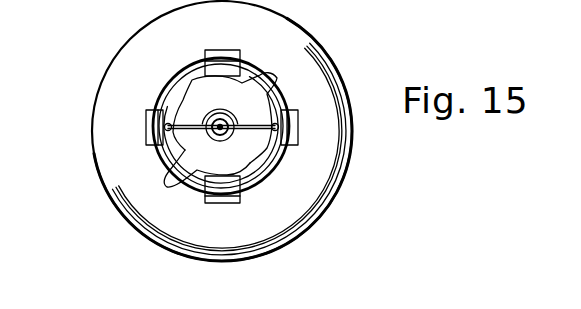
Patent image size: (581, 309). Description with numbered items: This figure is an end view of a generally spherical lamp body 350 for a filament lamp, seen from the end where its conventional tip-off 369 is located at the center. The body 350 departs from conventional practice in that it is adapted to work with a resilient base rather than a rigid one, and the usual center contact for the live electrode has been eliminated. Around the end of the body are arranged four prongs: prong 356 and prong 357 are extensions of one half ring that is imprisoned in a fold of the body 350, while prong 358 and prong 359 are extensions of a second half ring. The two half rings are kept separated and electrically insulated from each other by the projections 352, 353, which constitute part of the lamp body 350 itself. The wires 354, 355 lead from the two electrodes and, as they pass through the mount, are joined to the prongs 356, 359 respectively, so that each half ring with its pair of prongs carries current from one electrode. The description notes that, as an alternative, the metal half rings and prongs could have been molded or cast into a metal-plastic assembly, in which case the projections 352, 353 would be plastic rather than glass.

The body 350 is at (110, 183).
The gas projection 352 is at (277, 77).
The gas projection 353 is at (170, 184).
The wire 354 is at (158, 157).
The wire 355 is at (264, 166).
The prong 356 is at (167, 127).
The prong 357 is at (225, 50).
The prong 358 is at (238, 203).
The prong 359 is at (298, 133).
The tip-off 369 is at (203, 117).